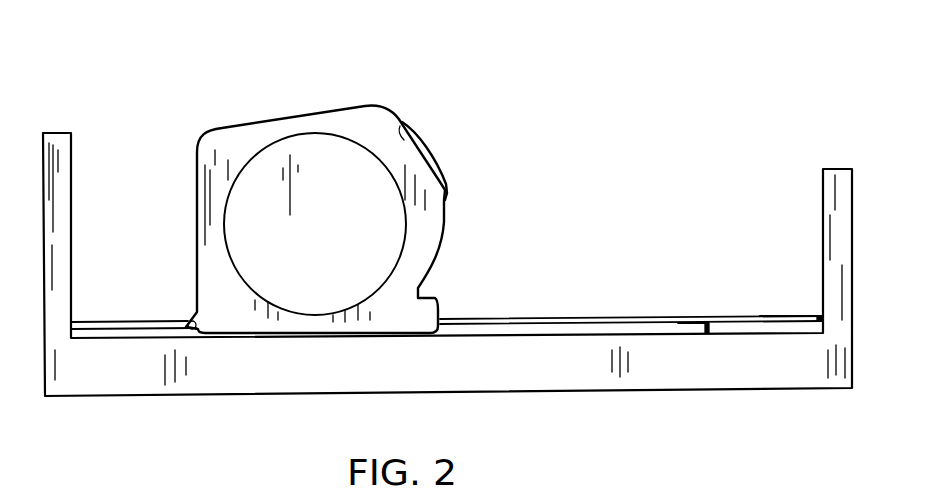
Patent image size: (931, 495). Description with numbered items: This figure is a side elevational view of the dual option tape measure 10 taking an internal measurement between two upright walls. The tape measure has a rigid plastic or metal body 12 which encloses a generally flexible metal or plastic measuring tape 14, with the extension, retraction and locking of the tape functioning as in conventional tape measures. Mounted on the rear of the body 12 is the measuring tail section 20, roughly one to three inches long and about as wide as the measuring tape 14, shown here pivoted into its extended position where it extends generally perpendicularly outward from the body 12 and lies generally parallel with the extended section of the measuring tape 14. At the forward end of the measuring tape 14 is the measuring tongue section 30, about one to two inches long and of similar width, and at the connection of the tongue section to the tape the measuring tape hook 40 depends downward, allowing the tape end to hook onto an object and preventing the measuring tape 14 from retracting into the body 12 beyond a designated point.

The dual option tape measure 10 is at (304, 102).
The body 12 is at (396, 135).
The measuring tape 14 is at (538, 317).
The measuring tail section 20 is at (128, 331).
The measuring tongue section 30 is at (767, 313).
The measuring tape hook 40 is at (710, 327).